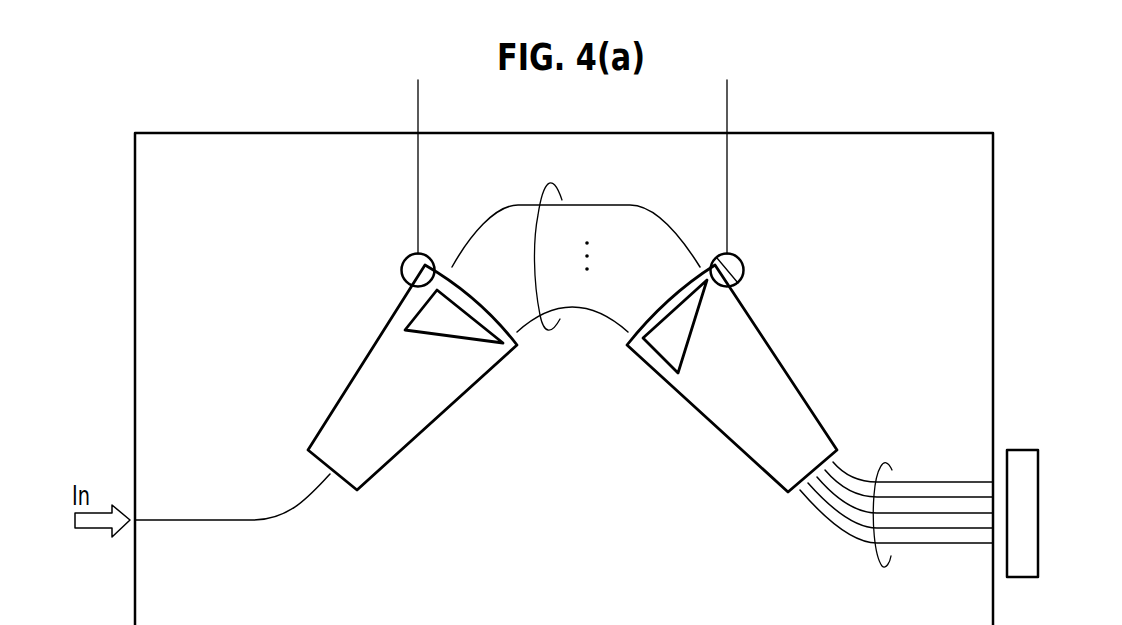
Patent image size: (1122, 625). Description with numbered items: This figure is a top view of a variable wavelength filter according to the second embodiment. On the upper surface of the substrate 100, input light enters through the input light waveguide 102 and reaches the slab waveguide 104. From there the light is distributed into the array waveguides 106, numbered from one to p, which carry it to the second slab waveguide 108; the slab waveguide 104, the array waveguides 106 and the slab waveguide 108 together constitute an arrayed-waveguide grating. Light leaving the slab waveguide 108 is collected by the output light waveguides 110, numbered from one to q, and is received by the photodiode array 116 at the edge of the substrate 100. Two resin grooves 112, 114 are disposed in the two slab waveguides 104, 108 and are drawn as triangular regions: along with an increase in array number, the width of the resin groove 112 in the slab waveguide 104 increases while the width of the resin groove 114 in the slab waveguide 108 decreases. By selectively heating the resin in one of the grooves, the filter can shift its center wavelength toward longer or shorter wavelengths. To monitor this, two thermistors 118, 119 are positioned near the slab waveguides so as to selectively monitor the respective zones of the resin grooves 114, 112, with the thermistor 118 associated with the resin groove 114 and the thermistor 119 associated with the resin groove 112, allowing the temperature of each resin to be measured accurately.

The substrate 100 is at (168, 132).
The input light waveguide 102 is at (213, 519).
The slab waveguide 104 is at (423, 437).
The array waveguides 106 is at (542, 182).
The slab waveguide 108 is at (720, 433).
The output light waveguides 110 is at (880, 458).
The resin groove 112 is at (418, 312).
The resin groove 114 is at (710, 300).
The photodiode array 116 is at (1039, 463).
The thermistor 118 is at (743, 262).
The thermistor 119 is at (408, 256).